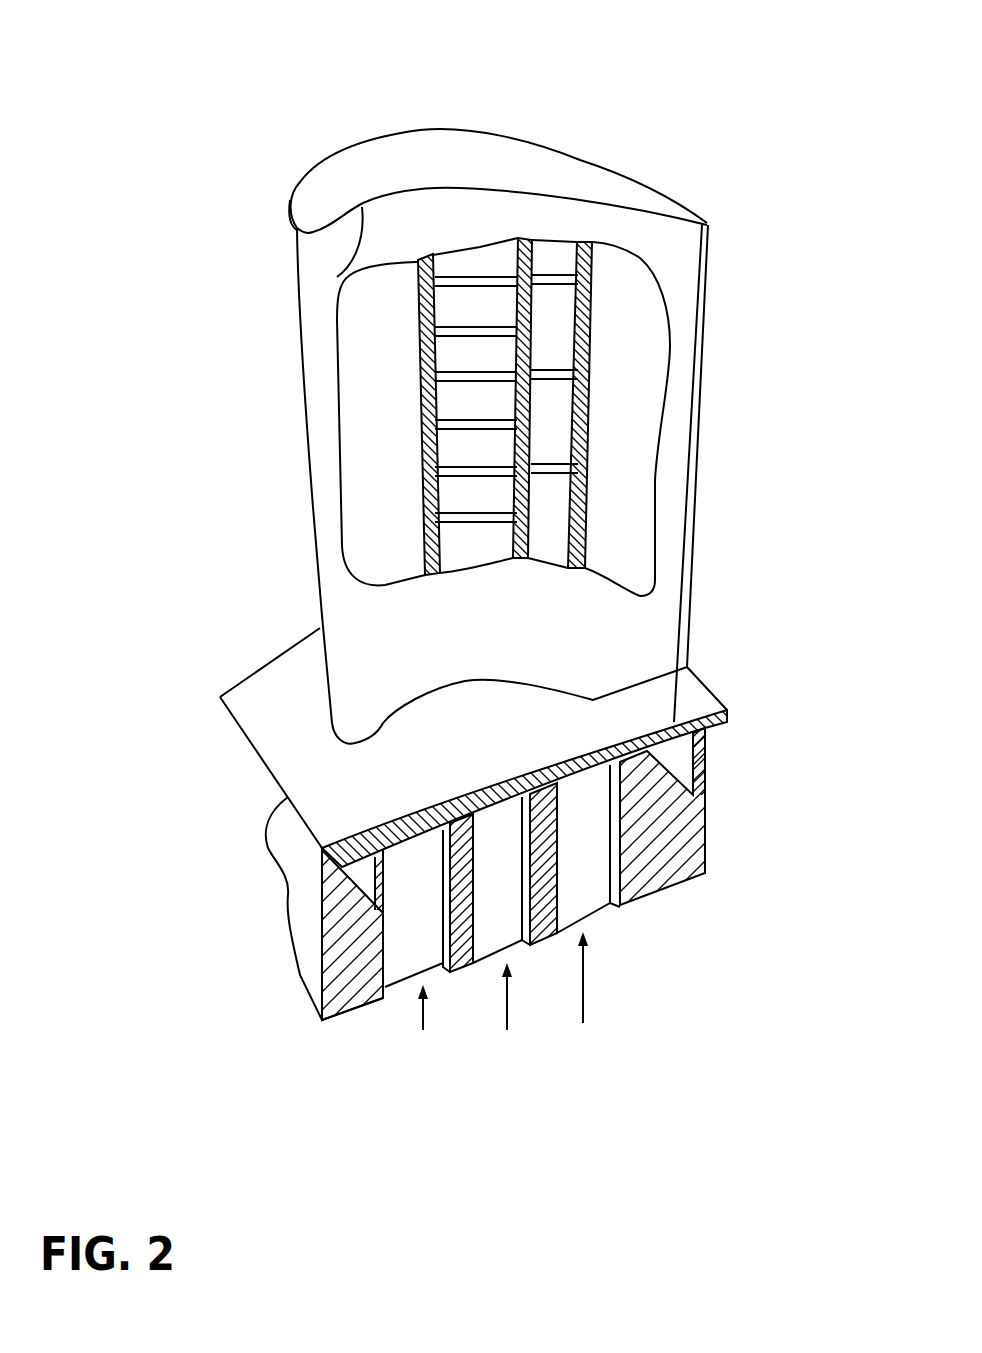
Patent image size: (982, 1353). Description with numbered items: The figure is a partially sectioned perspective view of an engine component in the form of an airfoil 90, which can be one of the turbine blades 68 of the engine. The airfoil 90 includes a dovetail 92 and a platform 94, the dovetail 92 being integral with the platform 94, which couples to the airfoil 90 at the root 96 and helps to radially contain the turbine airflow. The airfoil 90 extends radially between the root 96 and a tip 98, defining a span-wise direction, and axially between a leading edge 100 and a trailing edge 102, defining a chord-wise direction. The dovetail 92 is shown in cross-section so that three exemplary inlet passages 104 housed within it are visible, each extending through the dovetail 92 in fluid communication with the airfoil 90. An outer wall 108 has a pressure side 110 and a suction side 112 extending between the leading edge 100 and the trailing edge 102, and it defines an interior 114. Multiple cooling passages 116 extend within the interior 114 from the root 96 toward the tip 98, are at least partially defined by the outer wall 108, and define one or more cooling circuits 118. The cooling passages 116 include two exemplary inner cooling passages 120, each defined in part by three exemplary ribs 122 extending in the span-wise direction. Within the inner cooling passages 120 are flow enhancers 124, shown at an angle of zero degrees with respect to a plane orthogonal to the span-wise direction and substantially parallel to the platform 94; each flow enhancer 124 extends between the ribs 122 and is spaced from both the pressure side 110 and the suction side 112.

The turbine blade 68 is at (680, 421).
The airfoil 90 is at (415, 118).
The dovetail 92 is at (307, 897).
The platform 94 is at (283, 728).
The root 96 is at (630, 703).
The tip 98 is at (340, 186).
The leading edge 100 is at (295, 226).
The trailing edge 102 is at (712, 228).
The inlet passage 104 is at (505, 1020).
The outer wall 108 is at (657, 190).
The pressure side 110 is at (337, 277).
The suction side 112 is at (490, 132).
The interior 114 is at (391, 438).
The cooling passages 116 is at (550, 497).
The cooling circuit 118 is at (554, 354).
The inner cooling passage 120 is at (562, 428).
The rib 122 is at (592, 303).
The flow enhancer 124 is at (550, 273).